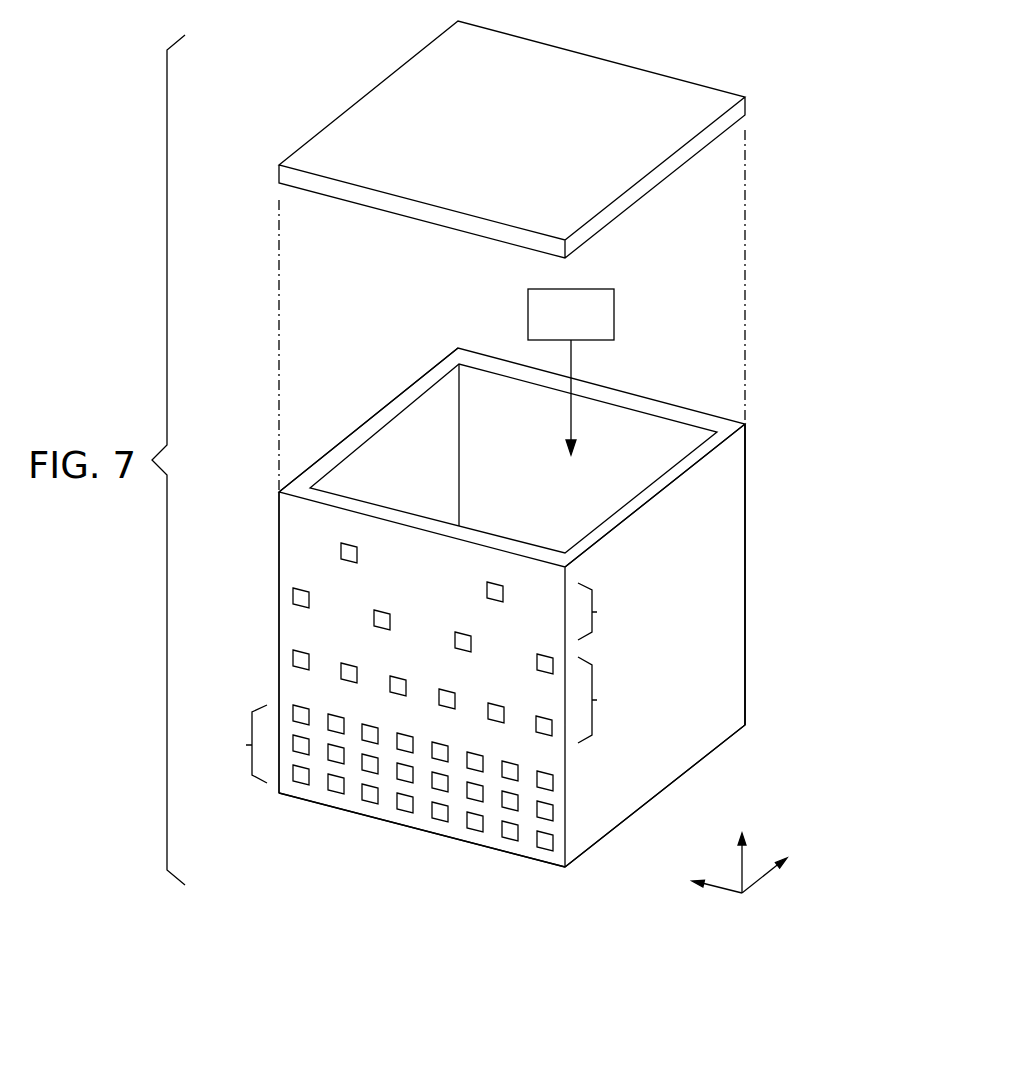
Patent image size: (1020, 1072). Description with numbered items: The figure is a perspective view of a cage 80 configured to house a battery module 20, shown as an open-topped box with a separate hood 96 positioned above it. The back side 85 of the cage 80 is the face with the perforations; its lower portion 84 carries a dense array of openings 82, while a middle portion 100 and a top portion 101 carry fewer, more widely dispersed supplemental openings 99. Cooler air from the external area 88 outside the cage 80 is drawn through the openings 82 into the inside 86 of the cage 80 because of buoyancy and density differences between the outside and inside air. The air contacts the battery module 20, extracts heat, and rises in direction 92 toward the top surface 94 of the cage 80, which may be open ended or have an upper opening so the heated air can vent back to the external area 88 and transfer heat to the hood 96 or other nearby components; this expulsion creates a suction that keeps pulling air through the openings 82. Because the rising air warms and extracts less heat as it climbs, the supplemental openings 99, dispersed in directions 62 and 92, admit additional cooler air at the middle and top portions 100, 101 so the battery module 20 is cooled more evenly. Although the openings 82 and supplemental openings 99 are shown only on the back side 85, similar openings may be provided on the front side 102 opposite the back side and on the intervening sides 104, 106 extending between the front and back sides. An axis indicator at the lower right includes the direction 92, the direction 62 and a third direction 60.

The hood 96 is at (665, 95).
The cage 80 is at (350, 353).
The top surface 94 is at (660, 407).
The inside 86 is at (392, 480).
The battery module 20 is at (560, 328).
The back side 85 is at (290, 522).
The intervening side 106 is at (278, 565).
The front side 102 is at (745, 548).
The intervening side 104 is at (712, 658).
The top portion 101 is at (597, 613).
The middle portion 100 is at (597, 700).
The external area 88 is at (273, 847).
The supplemental openings 99 is at (358, 556).
The openings 82 is at (420, 857).
The lower portion 84 is at (250, 745).
The direction 92 is at (740, 868).
The axis 60 is at (760, 877).
The direction 62 is at (727, 893).